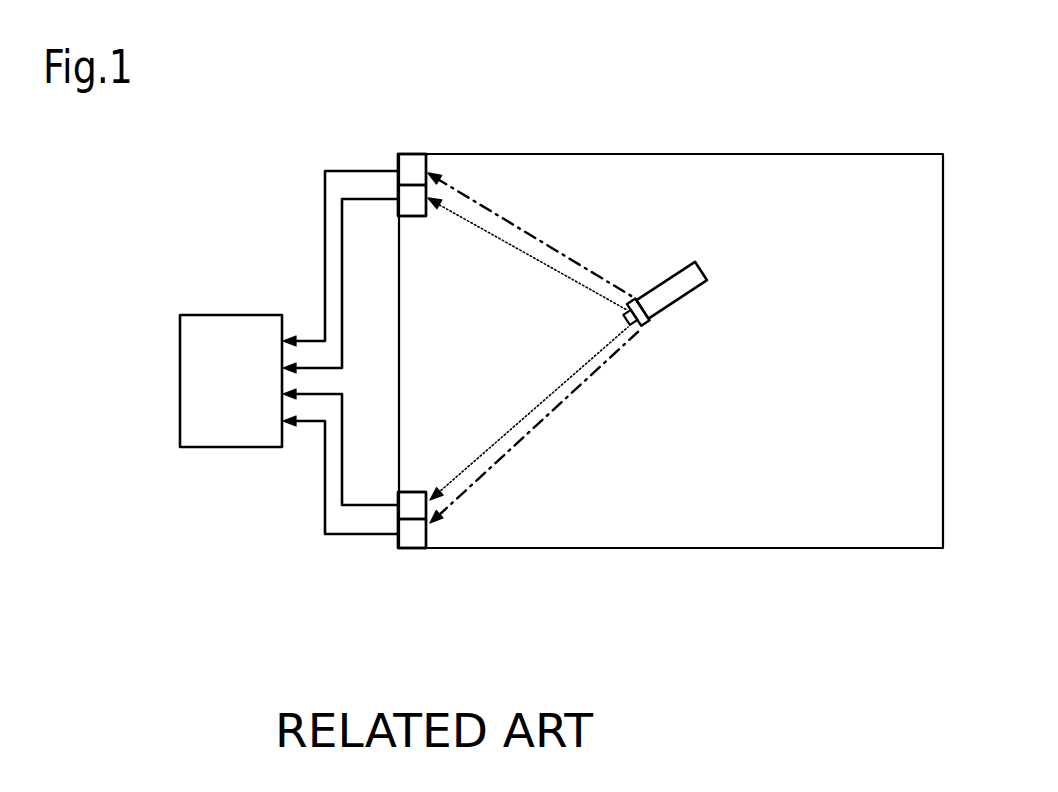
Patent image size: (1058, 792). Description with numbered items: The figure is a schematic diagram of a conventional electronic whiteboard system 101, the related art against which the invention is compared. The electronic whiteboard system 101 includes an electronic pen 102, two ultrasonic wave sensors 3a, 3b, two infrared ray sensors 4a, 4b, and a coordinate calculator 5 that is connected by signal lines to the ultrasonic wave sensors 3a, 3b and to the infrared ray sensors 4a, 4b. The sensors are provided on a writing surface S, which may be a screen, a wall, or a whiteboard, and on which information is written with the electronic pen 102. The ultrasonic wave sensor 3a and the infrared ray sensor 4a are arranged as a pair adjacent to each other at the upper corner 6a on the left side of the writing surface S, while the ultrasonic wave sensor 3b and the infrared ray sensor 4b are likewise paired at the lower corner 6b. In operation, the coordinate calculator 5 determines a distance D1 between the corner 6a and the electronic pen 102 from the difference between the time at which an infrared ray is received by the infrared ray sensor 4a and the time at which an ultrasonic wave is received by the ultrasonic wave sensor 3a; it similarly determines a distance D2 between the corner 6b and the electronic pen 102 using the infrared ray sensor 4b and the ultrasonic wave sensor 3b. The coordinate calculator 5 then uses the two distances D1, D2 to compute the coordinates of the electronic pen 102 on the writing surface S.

The electronic whiteboard system 101 is at (213, 210).
The electronic pen 102 is at (670, 275).
The writing surface S is at (785, 152).
The coordinate calculator 5 is at (213, 315).
The infrared ray sensor 4a is at (363, 175).
The infrared ray sensor 4b is at (378, 526).
The corner 6a is at (387, 157).
The ultrasonic wave sensor 3a is at (398, 205).
The ultrasonic wave sensor 3b is at (398, 500).
The corner 6b is at (390, 553).
The distance D1 is at (530, 241).
The distance D2 is at (535, 425).